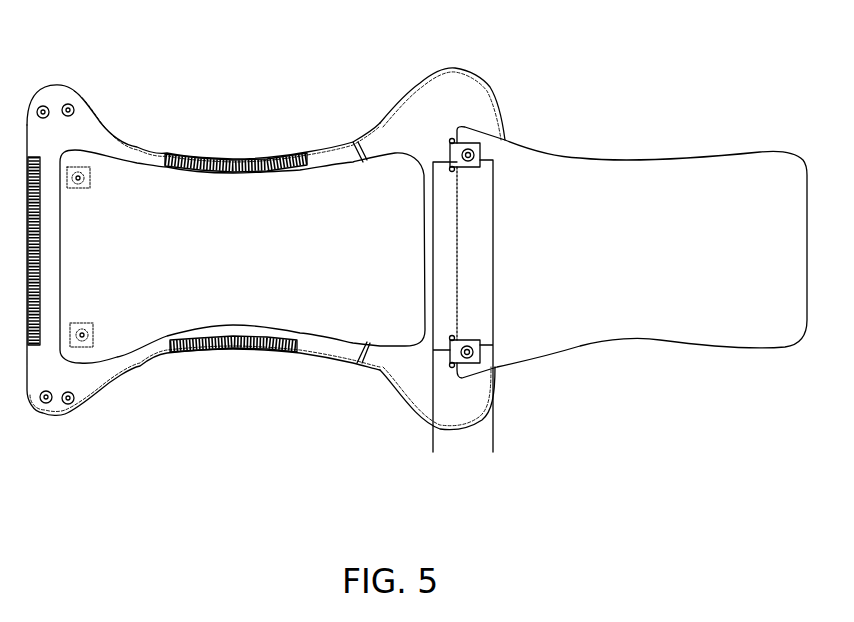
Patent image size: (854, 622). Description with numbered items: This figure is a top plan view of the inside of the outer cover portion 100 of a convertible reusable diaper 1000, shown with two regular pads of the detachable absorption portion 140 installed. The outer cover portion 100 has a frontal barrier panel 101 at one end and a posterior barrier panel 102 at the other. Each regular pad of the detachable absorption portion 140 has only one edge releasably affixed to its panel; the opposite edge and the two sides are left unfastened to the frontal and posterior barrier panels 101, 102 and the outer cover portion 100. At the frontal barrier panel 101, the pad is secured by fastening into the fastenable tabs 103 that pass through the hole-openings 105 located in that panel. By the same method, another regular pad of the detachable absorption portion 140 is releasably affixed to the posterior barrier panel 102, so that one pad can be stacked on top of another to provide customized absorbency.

The convertible reusable diaper 1000 is at (695, 52).
The outer cover portion 100 is at (492, 76).
The frontal barrier panel 101 is at (480, 106).
The posterior barrier panel 102 is at (72, 125).
The fastenable tabs 103 is at (495, 316).
The hole-openings 105 is at (440, 319).
The regular pad of the detachable absorption portion 140 is at (103, 187).